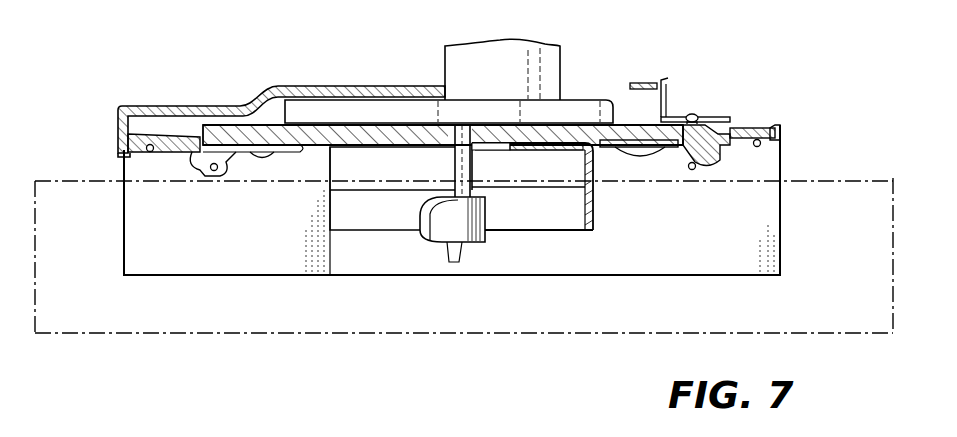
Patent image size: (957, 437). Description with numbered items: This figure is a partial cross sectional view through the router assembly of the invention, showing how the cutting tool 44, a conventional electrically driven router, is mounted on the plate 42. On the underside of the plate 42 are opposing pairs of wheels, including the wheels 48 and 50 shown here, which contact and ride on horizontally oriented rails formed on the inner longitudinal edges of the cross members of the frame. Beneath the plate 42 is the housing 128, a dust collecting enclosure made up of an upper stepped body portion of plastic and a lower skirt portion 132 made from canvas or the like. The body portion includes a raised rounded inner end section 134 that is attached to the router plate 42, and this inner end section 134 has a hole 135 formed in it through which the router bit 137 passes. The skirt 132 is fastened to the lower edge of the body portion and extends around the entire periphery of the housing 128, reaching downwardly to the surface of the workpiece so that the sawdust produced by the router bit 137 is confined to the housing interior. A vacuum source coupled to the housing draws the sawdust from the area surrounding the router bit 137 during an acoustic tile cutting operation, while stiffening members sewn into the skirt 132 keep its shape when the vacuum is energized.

The cutting tool 44 is at (545, 66).
The plate 42 is at (350, 135).
The wheels 48 is at (238, 158).
The wheels 50 is at (614, 160).
The housing 128 is at (560, 232).
The skirt portion 132 is at (594, 218).
The inner end section 134 is at (527, 150).
The hole 135 is at (479, 150).
The router bit 137 is at (470, 218).